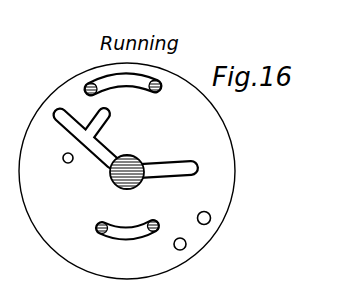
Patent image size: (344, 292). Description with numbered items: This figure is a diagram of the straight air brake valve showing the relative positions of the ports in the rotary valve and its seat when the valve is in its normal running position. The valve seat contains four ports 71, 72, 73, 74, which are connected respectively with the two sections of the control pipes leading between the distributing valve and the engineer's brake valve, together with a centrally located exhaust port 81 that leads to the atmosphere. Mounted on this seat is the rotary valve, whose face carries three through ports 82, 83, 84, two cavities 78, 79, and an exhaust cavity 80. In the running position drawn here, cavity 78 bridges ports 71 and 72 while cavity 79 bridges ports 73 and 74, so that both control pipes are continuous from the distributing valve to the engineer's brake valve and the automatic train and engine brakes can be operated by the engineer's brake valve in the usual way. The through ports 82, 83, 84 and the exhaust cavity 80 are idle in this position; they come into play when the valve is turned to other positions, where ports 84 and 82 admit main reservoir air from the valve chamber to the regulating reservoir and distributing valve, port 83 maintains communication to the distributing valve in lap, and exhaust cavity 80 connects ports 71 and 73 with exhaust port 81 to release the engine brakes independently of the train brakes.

The port 71 is at (153, 232).
The port 72 is at (100, 233).
The port 73 is at (161, 87).
The port 74 is at (86, 86).
The cavity 78 is at (132, 239).
The cavity 79 is at (123, 85).
The exhaust cavity 80 is at (117, 155).
The exhaust port 81 is at (113, 181).
The through port 82 is at (185, 249).
The through port 83 is at (211, 220).
The through port 84 is at (63, 158).